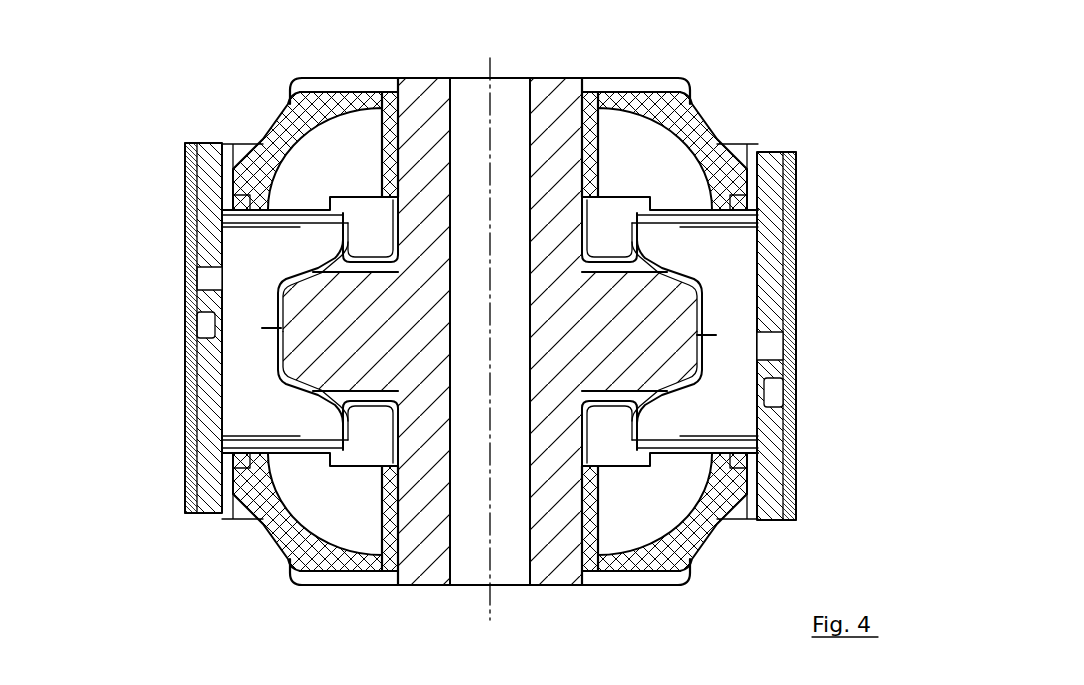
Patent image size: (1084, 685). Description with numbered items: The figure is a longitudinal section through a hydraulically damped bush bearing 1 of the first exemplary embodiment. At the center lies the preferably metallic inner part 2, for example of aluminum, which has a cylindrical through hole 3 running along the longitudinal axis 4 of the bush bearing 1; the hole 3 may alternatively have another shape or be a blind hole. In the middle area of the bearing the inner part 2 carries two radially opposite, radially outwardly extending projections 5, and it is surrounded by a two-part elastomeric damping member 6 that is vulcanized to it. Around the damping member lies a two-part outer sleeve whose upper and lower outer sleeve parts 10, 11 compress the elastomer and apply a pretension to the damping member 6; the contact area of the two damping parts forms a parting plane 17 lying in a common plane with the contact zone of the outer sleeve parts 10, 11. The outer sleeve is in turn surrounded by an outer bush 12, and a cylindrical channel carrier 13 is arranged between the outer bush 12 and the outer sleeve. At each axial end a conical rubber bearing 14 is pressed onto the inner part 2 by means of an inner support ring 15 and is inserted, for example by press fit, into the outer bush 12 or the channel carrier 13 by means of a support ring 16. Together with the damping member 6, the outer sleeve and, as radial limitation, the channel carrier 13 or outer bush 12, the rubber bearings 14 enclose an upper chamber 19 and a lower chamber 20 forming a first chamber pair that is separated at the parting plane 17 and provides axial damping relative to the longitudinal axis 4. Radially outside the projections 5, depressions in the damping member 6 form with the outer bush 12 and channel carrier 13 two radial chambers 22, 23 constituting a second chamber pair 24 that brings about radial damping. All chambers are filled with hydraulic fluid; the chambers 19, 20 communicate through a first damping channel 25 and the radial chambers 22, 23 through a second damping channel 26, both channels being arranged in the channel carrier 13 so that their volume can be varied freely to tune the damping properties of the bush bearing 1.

The bush bearing 1 is at (771, 104).
The inner part 2 is at (557, 124).
The through hole 3 is at (502, 123).
The longitudinal axis 4 is at (492, 65).
The projections 5 is at (302, 308).
The elastomeric damping member 6 is at (338, 257).
The upper outer sleeve part 10 is at (265, 142).
The lower outer sleeve part 11 is at (685, 420).
The outer bush 12 is at (757, 418).
The channel carrier 13 is at (208, 437).
The conical rubber bearing 14 is at (693, 145).
The inner support ring 15 is at (640, 87).
The support ring 16 is at (750, 162).
The parting plane 17 is at (271, 336).
The upper chamber 19 is at (312, 174).
The lower chamber 20 is at (675, 497).
The radial chamber 22 is at (253, 247).
The radial chamber 23 is at (738, 250).
The second chamber pair 24 is at (266, 505).
The first damping channel 25 is at (770, 393).
The second damping channel 26 is at (770, 346).